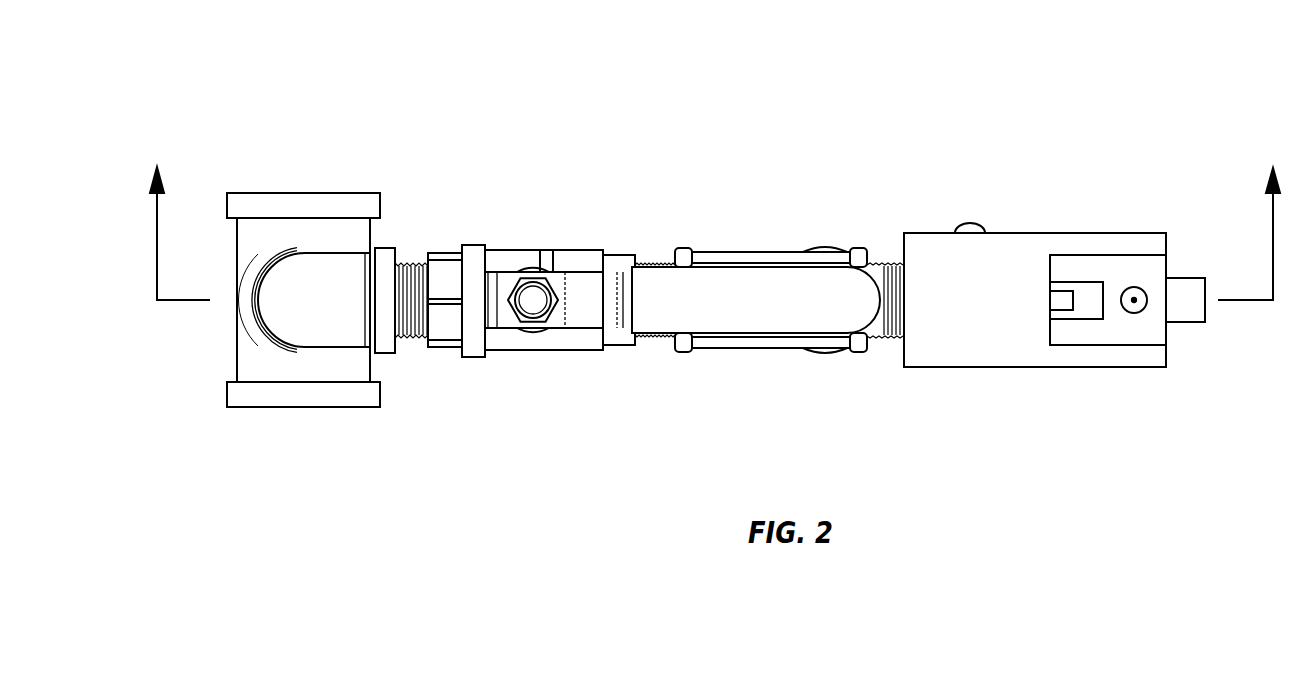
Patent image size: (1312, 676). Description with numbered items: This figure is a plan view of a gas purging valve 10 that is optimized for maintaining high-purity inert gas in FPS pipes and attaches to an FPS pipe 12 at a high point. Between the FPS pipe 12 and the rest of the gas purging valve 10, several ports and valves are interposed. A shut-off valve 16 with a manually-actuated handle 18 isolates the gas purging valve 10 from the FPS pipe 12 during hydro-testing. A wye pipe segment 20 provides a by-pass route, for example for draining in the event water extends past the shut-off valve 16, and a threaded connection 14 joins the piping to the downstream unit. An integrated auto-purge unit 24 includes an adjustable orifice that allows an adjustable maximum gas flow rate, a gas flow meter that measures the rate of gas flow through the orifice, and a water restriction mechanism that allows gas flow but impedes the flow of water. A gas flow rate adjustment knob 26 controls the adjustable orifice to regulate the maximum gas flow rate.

The gas purging valve 10 is at (616, 88).
The FPS pipe 12 is at (333, 235).
The threaded connection 14 is at (903, 282).
The shut-off valve 16 is at (563, 338).
The manually-actuated handle 18 is at (750, 318).
The wye pipe segment 20 is at (747, 253).
The integrated auto-purge unit 24 is at (1042, 233).
The gas flow rate adjustment knob 26 is at (1183, 323).